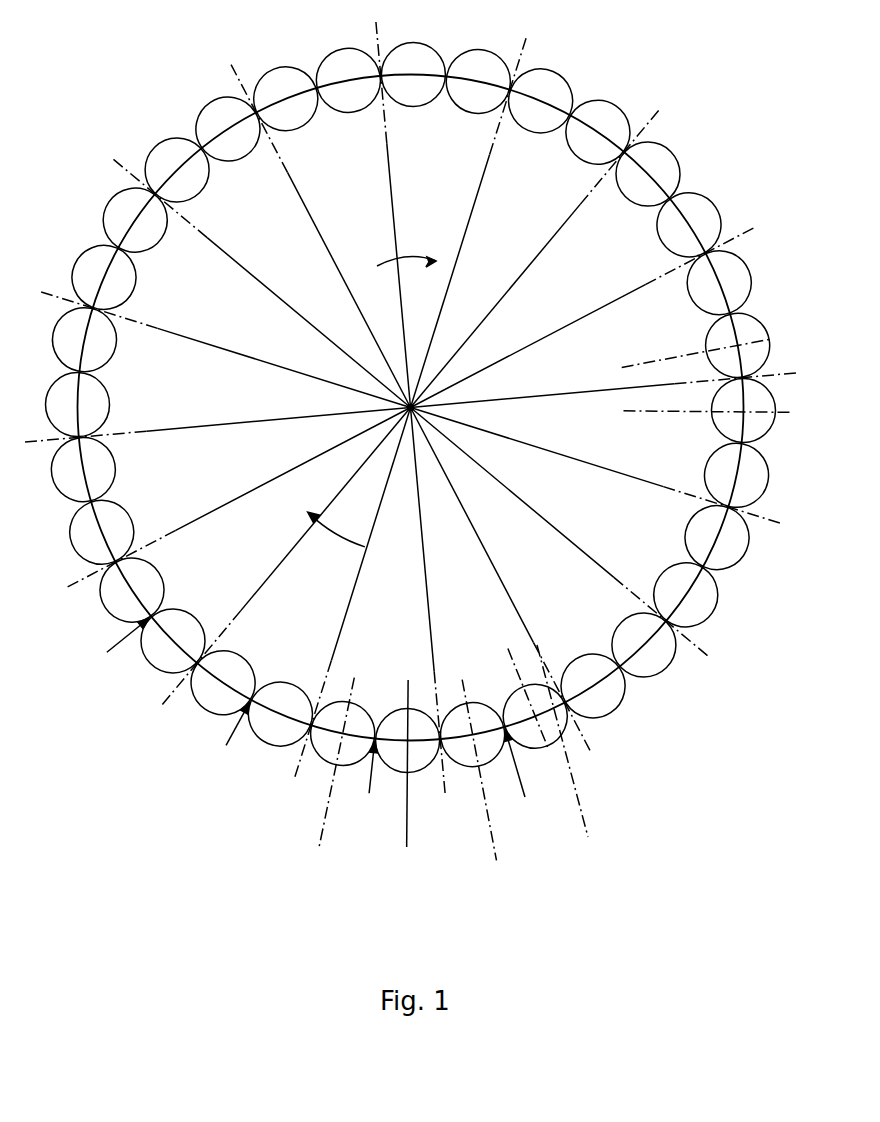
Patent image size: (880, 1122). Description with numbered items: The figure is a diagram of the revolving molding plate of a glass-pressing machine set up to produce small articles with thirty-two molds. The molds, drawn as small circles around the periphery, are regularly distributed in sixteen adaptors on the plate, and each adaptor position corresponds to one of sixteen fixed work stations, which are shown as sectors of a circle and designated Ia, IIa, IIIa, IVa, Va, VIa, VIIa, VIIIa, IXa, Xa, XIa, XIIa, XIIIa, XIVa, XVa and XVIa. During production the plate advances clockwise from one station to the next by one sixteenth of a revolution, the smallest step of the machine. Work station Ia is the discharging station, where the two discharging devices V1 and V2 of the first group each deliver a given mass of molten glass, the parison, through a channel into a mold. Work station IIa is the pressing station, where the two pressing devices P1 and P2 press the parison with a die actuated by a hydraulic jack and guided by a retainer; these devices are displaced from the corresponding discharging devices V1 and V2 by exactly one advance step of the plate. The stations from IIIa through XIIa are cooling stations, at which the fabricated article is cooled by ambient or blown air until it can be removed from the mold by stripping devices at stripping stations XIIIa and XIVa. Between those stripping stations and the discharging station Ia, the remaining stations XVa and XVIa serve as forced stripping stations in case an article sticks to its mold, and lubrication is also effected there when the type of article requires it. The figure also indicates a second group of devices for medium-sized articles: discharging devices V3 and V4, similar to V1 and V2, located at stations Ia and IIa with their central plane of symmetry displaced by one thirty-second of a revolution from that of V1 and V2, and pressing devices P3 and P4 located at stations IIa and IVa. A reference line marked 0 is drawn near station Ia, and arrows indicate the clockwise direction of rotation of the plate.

The work station Ia is at (501, 590).
The work station IIa is at (375, 602).
The cooling station IIIa is at (295, 594).
The work station IVa is at (249, 557).
The work station Va is at (228, 498).
The work station VIa is at (216, 372).
The work station VIIa is at (224, 292).
The work station VIIIa is at (260, 246).
The work station IXa is at (320, 225).
The work station Xa is at (446, 213).
The work station XIa is at (527, 221).
The cooling station XIIa is at (572, 257).
The stripping station XIIIa is at (593, 317).
The stripping station XIVa is at (605, 443).
The work station XVa is at (597, 524).
The work station XVIa is at (560, 569).
The pressing device P1 is at (418, 777).
The pressing device P2 is at (323, 776).
The pressing device P3 is at (230, 743).
The pressing device P4 is at (123, 652).
The discharging device V1 is at (574, 749).
The discharging device V2 is at (492, 778).
The discharging device V3 is at (520, 778).
The discharging device V4 is at (367, 783).
The zero reference line 0 is at (525, 688).